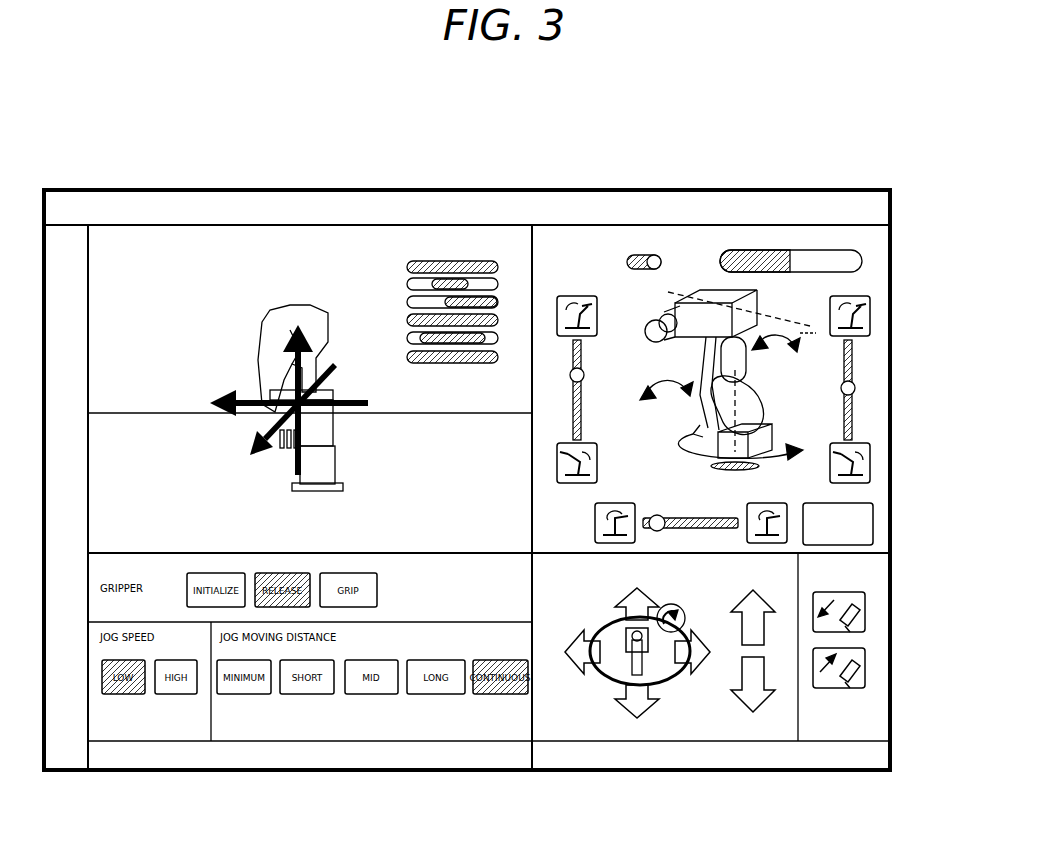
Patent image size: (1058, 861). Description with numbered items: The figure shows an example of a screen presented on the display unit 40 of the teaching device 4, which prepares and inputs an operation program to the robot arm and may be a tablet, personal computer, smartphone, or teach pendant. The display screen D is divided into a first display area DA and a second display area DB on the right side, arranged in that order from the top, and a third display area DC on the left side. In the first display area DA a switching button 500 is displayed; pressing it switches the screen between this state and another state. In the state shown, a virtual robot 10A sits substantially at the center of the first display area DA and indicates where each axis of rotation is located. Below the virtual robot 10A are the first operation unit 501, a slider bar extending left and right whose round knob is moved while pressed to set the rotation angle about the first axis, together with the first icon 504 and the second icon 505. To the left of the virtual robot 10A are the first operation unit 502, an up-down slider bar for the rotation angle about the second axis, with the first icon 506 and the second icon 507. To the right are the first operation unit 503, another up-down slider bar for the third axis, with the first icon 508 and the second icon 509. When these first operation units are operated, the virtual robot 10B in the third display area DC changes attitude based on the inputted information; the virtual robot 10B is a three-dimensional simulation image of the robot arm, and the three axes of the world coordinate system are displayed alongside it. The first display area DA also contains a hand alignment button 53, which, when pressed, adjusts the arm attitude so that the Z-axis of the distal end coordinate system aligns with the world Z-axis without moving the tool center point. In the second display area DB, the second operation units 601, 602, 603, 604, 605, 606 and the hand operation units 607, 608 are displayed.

The teaching device 4 is at (202, 138).
The display unit 40 is at (538, 190).
The display screen D is at (760, 190).
The first display area DA is at (711, 272).
The second display area DB is at (708, 717).
The third display area DC is at (338, 270).
The virtual robot 10A is at (702, 280).
The virtual robot 10B is at (291, 318).
The switching button 500 is at (795, 252).
The first operation unit 501 is at (672, 522).
The first operation unit 502 is at (572, 412).
The first operation unit 503 is at (868, 362).
The first icon 504 is at (610, 503).
The second icon 505 is at (765, 503).
The first icon 506 is at (560, 300).
The second icon 507 is at (557, 463).
The first icon 508 is at (870, 314).
The second icon 509 is at (870, 460).
The hand alignment button 53 is at (874, 523).
The second operation unit 601 is at (574, 662).
The second operation unit 602 is at (700, 642).
The second operation unit 603 is at (645, 712).
The second operation unit 604 is at (650, 600).
The second operation unit 605 is at (760, 602).
The second operation unit 606 is at (768, 712).
The hand operation unit 607 is at (866, 612).
The hand operation unit 608 is at (866, 668).